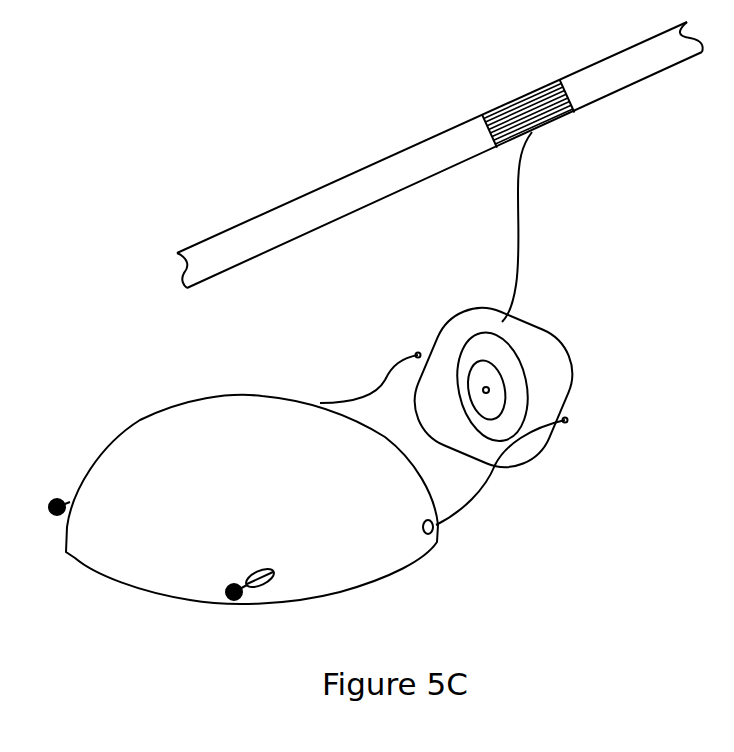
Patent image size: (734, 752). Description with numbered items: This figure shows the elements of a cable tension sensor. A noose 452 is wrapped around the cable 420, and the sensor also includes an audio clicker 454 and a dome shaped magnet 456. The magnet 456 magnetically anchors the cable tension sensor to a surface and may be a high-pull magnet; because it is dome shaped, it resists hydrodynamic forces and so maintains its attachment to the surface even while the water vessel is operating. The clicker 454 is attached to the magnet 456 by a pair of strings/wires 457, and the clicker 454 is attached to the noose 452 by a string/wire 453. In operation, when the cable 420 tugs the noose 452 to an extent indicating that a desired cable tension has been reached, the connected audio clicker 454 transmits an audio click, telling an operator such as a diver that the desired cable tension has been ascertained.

The cable 420 is at (313, 200).
The noose 452 is at (553, 123).
The string/wire 453 is at (518, 197).
The audio clicker 454 is at (548, 370).
The dome shaped magnet 456 is at (163, 438).
The pair of strings/wires 457 is at (483, 497).